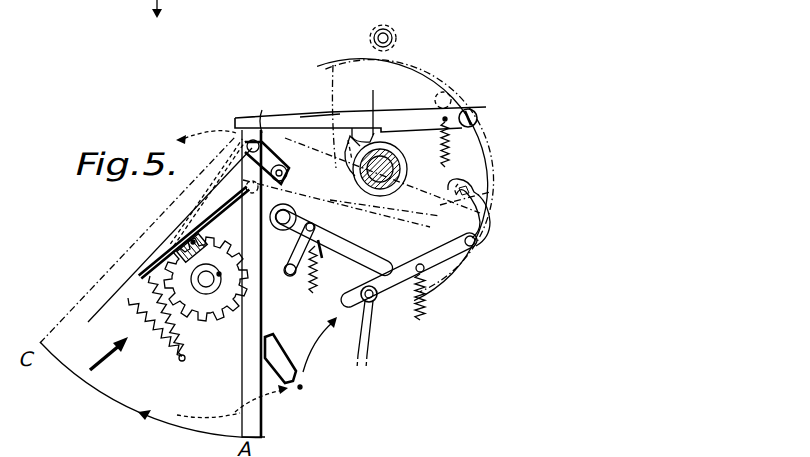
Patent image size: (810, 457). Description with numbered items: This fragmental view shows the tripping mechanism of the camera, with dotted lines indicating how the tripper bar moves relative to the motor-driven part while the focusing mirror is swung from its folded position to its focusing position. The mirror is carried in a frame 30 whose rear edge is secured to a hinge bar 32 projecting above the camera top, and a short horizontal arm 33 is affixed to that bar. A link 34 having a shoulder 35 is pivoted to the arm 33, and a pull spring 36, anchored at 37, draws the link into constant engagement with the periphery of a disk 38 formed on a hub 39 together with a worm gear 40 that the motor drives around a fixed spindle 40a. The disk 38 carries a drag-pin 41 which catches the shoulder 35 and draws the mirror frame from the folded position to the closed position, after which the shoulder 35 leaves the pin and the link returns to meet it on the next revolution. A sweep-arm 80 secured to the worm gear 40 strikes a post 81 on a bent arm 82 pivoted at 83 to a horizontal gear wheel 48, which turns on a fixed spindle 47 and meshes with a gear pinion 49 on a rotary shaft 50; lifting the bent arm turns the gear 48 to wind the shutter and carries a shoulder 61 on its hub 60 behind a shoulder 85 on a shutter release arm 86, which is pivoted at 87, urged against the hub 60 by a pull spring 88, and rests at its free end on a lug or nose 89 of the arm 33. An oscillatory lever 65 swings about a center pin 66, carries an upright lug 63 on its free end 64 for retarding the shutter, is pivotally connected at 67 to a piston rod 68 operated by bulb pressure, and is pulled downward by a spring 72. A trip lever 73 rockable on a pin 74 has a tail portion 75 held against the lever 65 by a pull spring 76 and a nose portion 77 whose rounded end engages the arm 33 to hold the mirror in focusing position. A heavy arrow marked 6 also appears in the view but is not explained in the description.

The direction arrow 6 is at (109, 353).
The frame 30 is at (80, 302).
The hinge bar 32 is at (285, 116).
The short horizontal arm 33 is at (361, 180).
The link 34 is at (147, 230).
The shoulder 35 is at (170, 243).
The pull spring 36 is at (129, 301).
The anchor 37 is at (166, 336).
The disk 38 is at (153, 330).
The hub 39 is at (163, 237).
The worm gear 40 is at (207, 321).
The fixed spindle 40a is at (289, 353).
The drag-pin 41 is at (170, 235).
The fixed spindle 47 is at (397, 200).
The gear wheel 48 is at (440, 64).
The gear pinion 49 is at (389, 25).
The rotary shaft 50 is at (397, 37).
The hub 60 is at (450, 110).
The shoulder 61 is at (356, 127).
The upright lug 63 is at (470, 195).
The free end 64 is at (480, 188).
The oscillatory lever 65 is at (440, 263).
The center pin 66 is at (478, 244).
The pivotal connection 67 is at (375, 302).
The piston rod 68 is at (330, 344).
The spring 72 is at (427, 317).
The trip lever 73 is at (316, 224).
The pin 74 is at (296, 212).
The tail portion 75 is at (333, 248).
The pull spring 76 is at (311, 291).
The nose portion 77 is at (207, 165).
The sweep-arm 80 is at (251, 263).
The post 81 is at (287, 275).
The bent arm 82 is at (362, 228).
The pivot 83 is at (452, 96).
The shoulder 85 is at (370, 103).
The shutter release arm 86 is at (318, 117).
The pivot 87 is at (478, 117).
The pull spring 88 is at (450, 157).
The lug or nose 89 is at (250, 112).